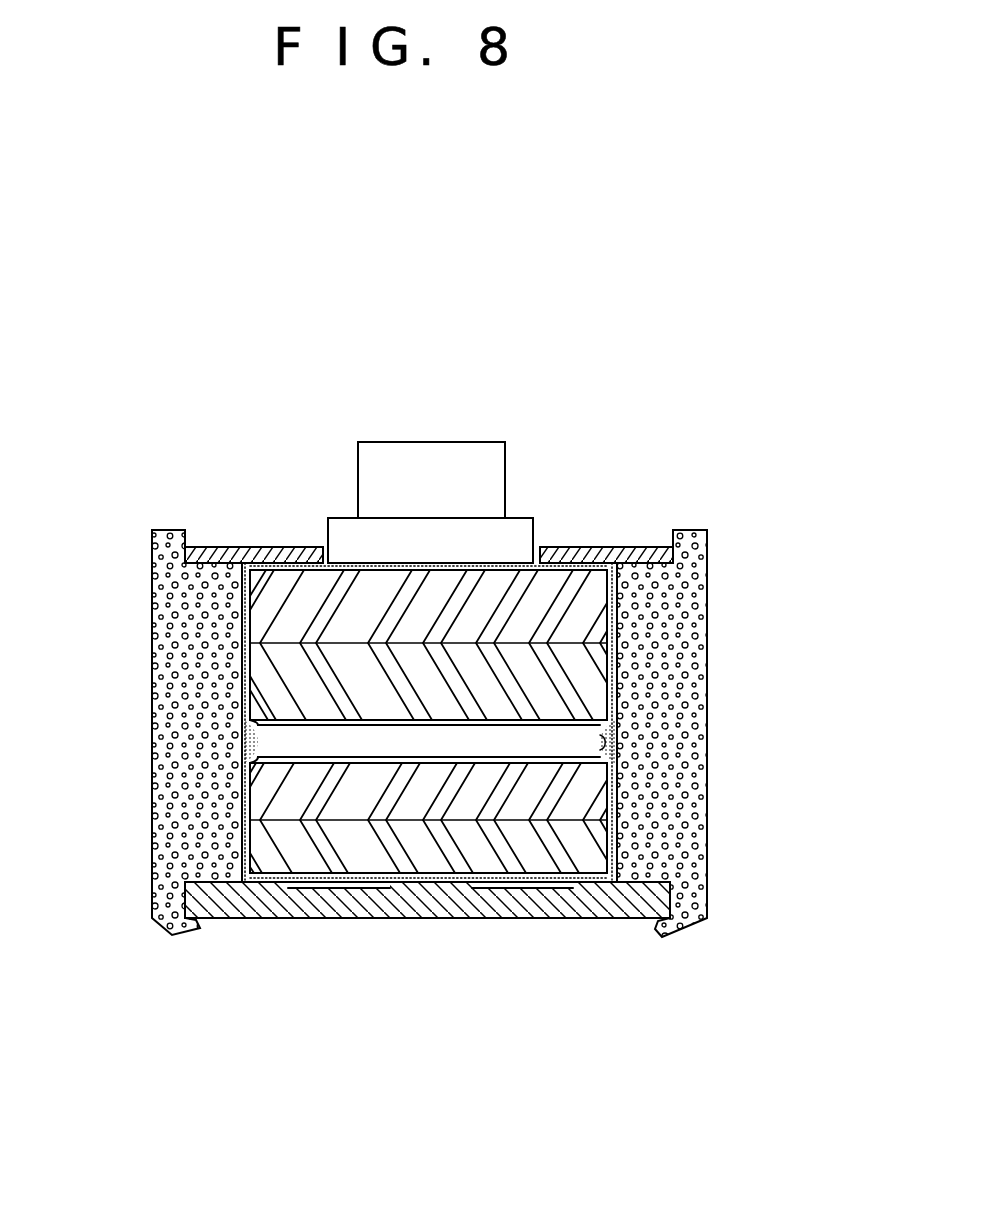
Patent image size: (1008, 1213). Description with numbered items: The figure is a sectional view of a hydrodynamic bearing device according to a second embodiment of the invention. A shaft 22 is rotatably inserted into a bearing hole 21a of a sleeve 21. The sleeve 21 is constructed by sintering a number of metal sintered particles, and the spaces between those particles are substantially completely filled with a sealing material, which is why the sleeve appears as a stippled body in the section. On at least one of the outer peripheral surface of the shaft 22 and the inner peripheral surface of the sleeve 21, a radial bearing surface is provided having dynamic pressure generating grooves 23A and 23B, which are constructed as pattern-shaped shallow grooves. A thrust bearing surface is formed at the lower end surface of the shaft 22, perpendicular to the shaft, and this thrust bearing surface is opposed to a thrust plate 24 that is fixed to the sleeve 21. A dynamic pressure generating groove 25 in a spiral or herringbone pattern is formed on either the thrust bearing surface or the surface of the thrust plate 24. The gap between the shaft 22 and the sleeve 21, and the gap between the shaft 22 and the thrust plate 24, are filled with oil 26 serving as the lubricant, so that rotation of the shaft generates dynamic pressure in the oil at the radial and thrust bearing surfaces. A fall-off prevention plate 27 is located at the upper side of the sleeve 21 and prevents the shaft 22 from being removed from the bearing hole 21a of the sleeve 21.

The sleeve 21 is at (665, 602).
The bearing hole 21a is at (613, 725).
The shaft 22 is at (430, 473).
The dynamic pressure generating groove 23A is at (300, 620).
The dynamic pressure generating groove 23B is at (422, 853).
The thrust plate 24 is at (610, 898).
The dynamic pressure generating groove 25 is at (320, 892).
The oil 26 is at (245, 745).
The fall-off prevention plate 27 is at (612, 547).